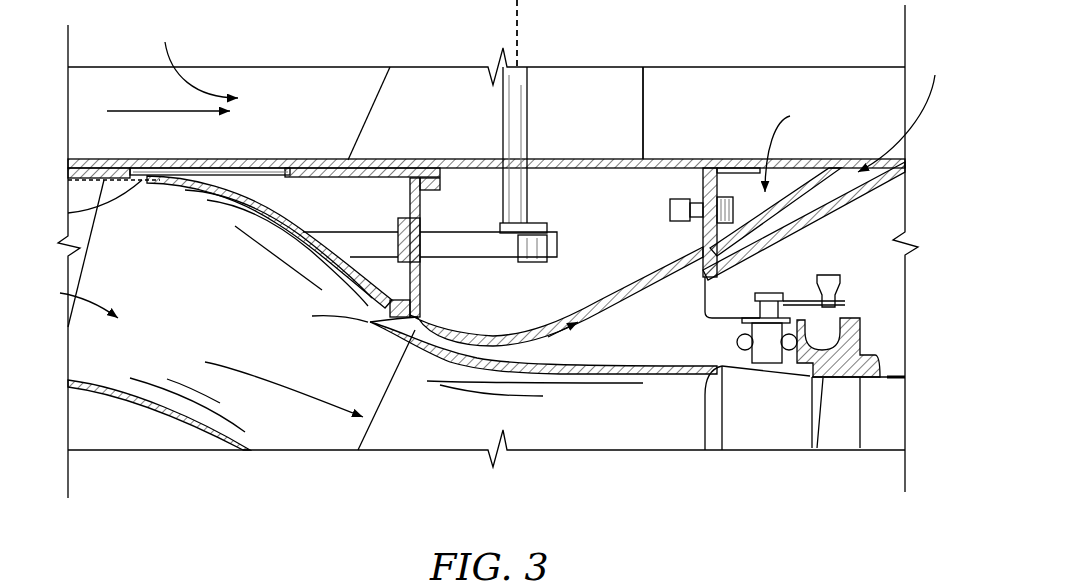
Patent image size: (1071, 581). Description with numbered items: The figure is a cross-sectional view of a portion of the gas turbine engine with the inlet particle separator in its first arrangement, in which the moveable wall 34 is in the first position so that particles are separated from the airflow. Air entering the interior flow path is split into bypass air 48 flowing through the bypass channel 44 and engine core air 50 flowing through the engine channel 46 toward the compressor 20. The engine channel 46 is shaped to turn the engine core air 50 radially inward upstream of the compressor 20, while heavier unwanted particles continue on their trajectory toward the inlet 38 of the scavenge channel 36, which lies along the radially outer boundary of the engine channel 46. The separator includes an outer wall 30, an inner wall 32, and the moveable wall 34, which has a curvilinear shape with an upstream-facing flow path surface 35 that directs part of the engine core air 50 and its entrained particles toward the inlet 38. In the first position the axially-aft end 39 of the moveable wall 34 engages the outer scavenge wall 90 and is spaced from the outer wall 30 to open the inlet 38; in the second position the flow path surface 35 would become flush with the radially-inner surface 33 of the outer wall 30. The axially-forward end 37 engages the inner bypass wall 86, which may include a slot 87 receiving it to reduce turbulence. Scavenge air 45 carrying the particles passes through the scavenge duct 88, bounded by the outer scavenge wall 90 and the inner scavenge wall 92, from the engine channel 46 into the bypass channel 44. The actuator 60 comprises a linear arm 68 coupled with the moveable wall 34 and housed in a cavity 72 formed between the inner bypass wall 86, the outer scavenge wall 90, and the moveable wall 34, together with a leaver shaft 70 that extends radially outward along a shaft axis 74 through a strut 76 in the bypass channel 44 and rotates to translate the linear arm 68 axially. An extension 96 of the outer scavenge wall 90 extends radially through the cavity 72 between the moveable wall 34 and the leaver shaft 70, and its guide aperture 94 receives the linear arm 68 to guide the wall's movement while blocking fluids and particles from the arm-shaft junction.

The compressor 20 is at (697, 417).
The outer wall 30 is at (458, 368).
The inner wall 32 is at (128, 385).
The radially-inner surface 33 is at (413, 353).
The moveable wall 34 is at (240, 185).
The flow path surface 35 is at (262, 236).
The scavenge channel 36 is at (905, 111).
The axially-forward end 37 is at (158, 188).
The inlet 38 is at (364, 324).
The axially-aft end 39 is at (399, 290).
The bypass channel 44 is at (194, 57).
The scavenge air 45 is at (312, 317).
The engine channel 46 is at (73, 253).
The bypass air 48 is at (125, 111).
The engine core air 50 is at (297, 400).
The actuator 60 is at (535, 95).
The linear arm 68 is at (352, 232).
The leaver shaft 70 is at (527, 125).
The cavity 72 is at (508, 315).
The shaft axis 74 is at (520, 48).
The strut 76 is at (378, 90).
The inner bypass wall 86 is at (598, 170).
The slot 87 is at (149, 160).
The scavenge duct 88 is at (793, 147).
The outer scavenge wall 90 is at (642, 275).
The inner scavenge wall 92 is at (795, 220).
The guide aperture 94 is at (418, 240).
The extension 96 is at (407, 205).